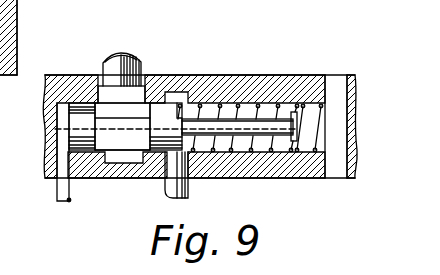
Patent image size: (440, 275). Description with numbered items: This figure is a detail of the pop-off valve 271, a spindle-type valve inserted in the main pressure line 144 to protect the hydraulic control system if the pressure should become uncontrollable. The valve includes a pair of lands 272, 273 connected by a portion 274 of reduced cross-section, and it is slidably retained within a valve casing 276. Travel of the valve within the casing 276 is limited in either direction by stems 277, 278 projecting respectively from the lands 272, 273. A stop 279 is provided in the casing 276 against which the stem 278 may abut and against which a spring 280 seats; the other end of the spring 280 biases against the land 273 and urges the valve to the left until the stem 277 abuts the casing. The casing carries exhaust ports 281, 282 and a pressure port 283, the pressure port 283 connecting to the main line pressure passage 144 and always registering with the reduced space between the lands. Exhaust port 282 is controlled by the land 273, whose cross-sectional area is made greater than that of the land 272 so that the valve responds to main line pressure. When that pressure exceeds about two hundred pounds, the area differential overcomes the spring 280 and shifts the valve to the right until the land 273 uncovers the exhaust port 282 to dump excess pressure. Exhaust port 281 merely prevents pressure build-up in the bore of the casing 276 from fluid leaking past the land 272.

The main pressure line 144 is at (115, 72).
The pop-off valve 271 is at (173, 100).
The land 272 is at (88, 140).
The land 273 is at (160, 140).
The portion of reduced cross-section 274 is at (132, 120).
The valve casing 276 is at (278, 88).
The stem 277 is at (63, 123).
The stem 278 is at (249, 127).
The stop 279 is at (337, 97).
The spring 280 is at (278, 138).
The exhaust port 281 is at (63, 152).
The exhaust port 282 is at (184, 155).
The pressure port 283 is at (133, 102).